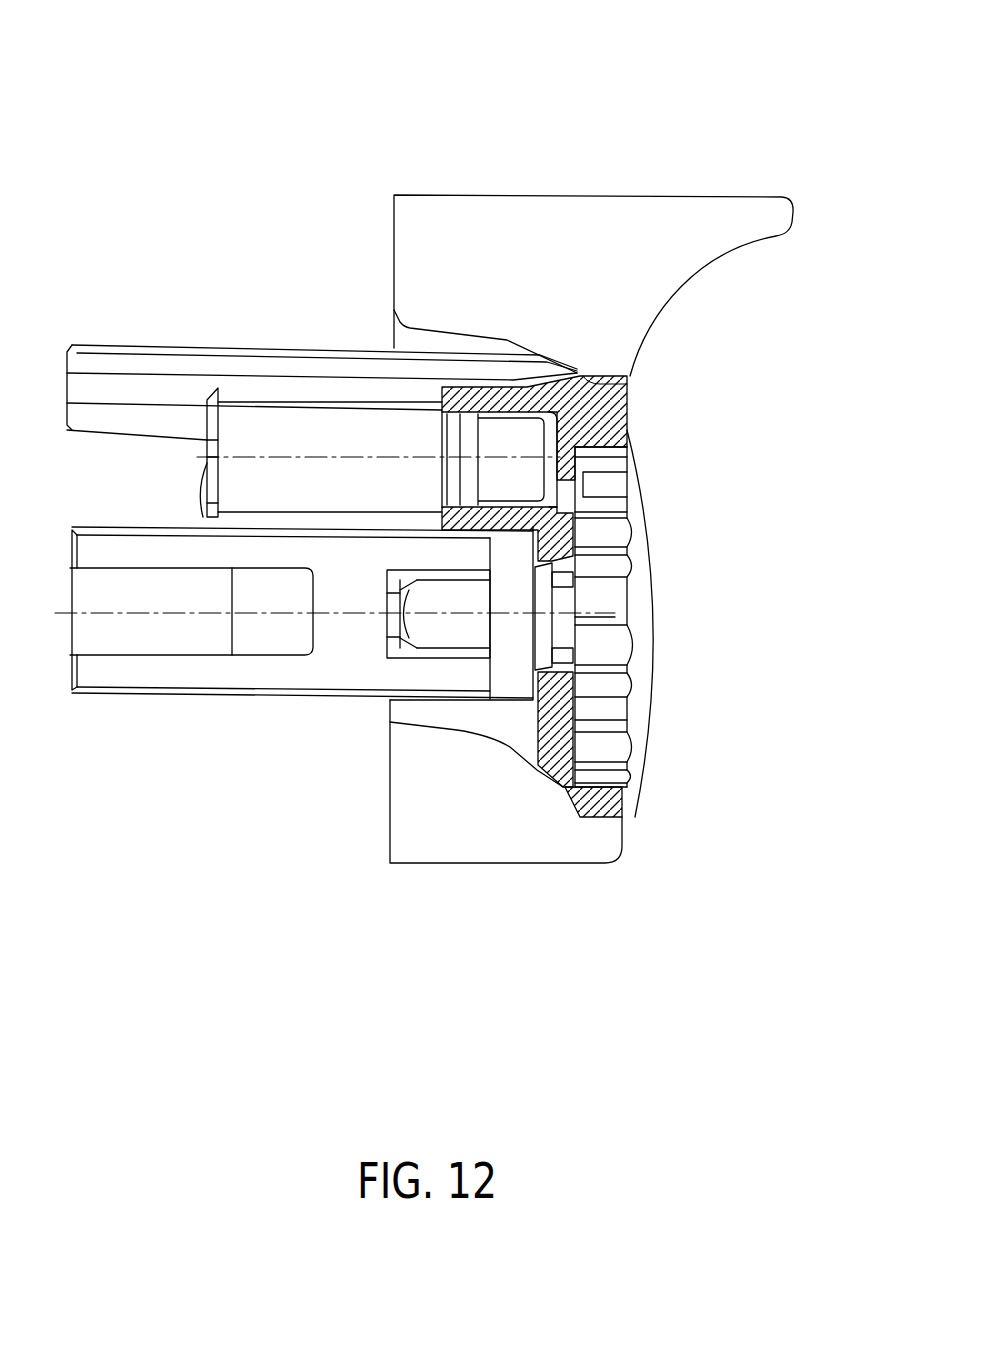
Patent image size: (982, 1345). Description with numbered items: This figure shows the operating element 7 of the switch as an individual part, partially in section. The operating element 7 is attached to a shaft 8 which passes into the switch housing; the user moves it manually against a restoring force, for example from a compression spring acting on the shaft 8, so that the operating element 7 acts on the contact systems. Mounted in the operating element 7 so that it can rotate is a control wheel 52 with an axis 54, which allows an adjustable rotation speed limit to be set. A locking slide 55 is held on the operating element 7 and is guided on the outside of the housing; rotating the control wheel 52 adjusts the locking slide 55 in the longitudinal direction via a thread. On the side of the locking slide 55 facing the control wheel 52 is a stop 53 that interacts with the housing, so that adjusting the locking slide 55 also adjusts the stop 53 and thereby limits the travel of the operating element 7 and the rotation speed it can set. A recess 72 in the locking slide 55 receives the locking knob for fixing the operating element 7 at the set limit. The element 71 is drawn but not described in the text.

The operating element 7 is at (537, 233).
The shaft 8 is at (343, 458).
The control wheel 52 is at (640, 618).
The stop 53 is at (387, 623).
The axis 54 is at (448, 615).
The locking slide 55 is at (133, 675).
The coupling sleeve 71 is at (440, 653).
The recess 72 is at (265, 633).